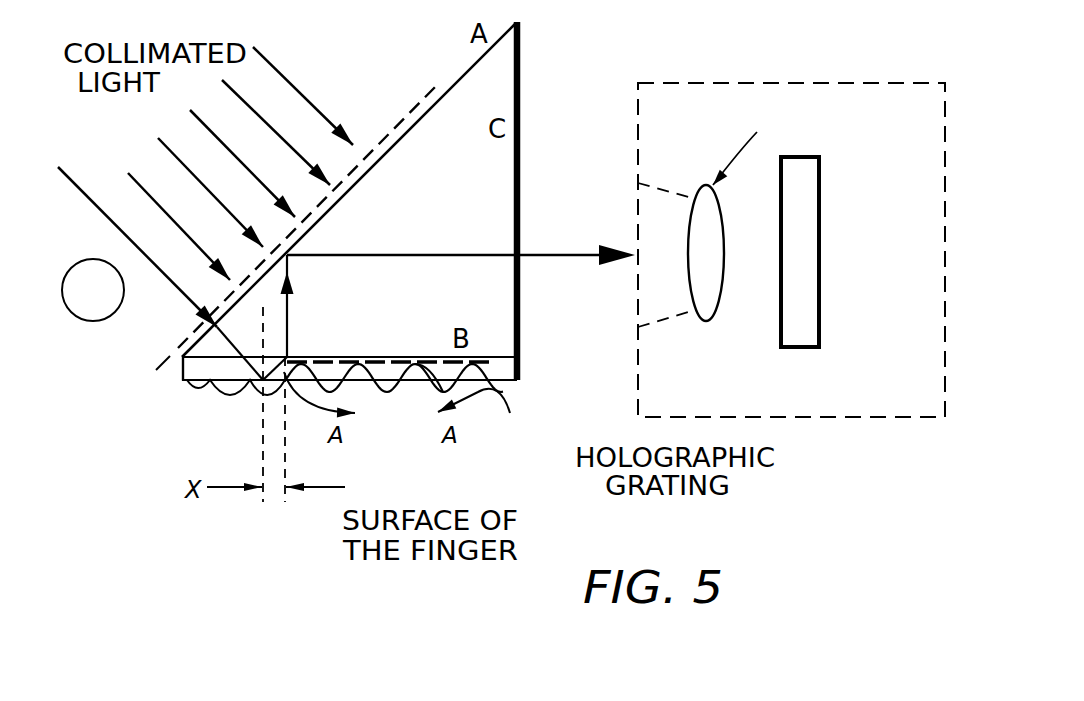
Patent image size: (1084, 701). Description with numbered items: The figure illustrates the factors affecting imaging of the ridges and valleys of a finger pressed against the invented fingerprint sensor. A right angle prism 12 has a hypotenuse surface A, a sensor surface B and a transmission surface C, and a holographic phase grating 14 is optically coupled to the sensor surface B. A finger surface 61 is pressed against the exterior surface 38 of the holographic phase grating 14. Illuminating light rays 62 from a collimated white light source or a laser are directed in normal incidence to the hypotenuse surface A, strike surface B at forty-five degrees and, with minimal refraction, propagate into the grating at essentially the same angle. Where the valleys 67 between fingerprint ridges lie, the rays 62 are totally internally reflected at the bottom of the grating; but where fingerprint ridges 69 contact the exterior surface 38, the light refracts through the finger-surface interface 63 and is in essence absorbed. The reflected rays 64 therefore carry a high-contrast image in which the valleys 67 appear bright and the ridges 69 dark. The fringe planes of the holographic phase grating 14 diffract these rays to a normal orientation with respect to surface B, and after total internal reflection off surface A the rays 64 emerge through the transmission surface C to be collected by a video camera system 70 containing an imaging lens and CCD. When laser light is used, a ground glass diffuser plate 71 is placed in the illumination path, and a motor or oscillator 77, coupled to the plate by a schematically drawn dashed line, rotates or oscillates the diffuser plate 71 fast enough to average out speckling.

The right angle prism 12 is at (493, 170).
The holographic phase grating 14 is at (525, 382).
The exterior surface of the holographic phase grating 38 is at (183, 378).
The finger surface 61 is at (403, 383).
The illuminating light rays 62 is at (300, 93).
The finger-surface interface 63 is at (440, 377).
The reflected rays 64 is at (373, 255).
The valleys 67 is at (477, 360).
The fingerprint ridges 69 is at (207, 383).
The video camera system 70 is at (728, 82).
The ground glass diffuser plate 71 is at (443, 80).
The motor or oscillator 77 is at (163, 363).